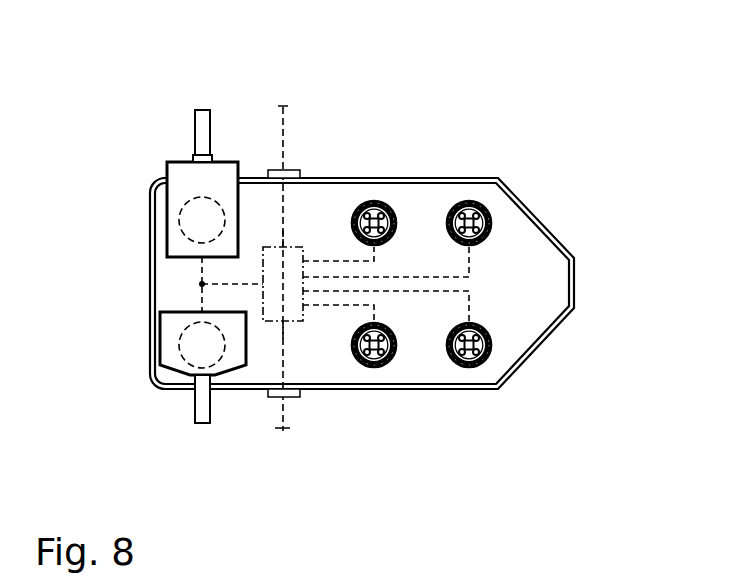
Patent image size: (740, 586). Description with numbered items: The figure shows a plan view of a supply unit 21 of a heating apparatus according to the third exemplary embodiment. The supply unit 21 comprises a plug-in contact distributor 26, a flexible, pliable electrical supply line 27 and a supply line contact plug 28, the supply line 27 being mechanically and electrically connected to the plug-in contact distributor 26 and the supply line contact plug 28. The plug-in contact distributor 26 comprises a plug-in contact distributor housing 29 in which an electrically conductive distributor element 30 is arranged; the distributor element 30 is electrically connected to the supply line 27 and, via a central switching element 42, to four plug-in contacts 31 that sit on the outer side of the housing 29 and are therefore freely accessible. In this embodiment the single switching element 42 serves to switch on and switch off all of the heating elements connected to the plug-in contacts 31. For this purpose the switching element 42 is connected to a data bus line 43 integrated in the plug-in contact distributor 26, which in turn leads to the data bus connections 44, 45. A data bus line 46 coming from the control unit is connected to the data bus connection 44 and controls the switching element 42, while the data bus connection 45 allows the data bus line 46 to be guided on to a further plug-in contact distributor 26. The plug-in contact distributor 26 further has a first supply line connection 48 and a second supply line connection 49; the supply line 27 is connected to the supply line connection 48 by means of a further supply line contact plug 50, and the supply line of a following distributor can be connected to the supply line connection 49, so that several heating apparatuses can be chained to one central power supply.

The supply unit 21 is at (442, 112).
The plug-in contact distributor 26 is at (580, 254).
The electrical supply line 27 is at (203, 110).
The supply line contact plug 28 is at (173, 335).
The plug-in contact distributor housing 29 is at (558, 290).
The distributor element 30 is at (311, 278).
The plug-in contacts 31 is at (383, 193).
The central switching element 42 is at (293, 257).
The data bus line 43 is at (281, 236).
The data bus connection 44 is at (294, 170).
The data bus connection 45 is at (293, 398).
The data bus line 46 is at (280, 118).
The first supply line connection 48 is at (193, 220).
The second supply line connection 49 is at (187, 350).
The further supply line contact plug 50 is at (173, 195).